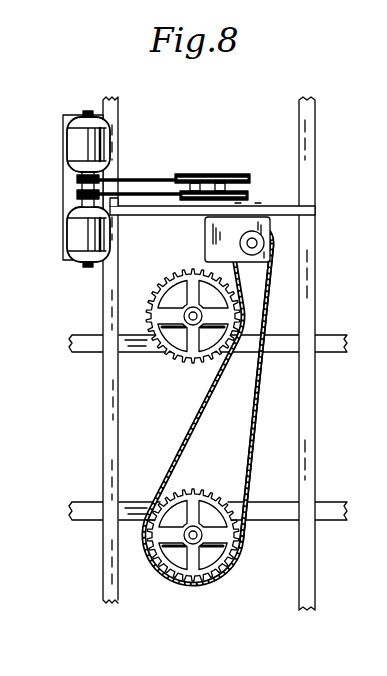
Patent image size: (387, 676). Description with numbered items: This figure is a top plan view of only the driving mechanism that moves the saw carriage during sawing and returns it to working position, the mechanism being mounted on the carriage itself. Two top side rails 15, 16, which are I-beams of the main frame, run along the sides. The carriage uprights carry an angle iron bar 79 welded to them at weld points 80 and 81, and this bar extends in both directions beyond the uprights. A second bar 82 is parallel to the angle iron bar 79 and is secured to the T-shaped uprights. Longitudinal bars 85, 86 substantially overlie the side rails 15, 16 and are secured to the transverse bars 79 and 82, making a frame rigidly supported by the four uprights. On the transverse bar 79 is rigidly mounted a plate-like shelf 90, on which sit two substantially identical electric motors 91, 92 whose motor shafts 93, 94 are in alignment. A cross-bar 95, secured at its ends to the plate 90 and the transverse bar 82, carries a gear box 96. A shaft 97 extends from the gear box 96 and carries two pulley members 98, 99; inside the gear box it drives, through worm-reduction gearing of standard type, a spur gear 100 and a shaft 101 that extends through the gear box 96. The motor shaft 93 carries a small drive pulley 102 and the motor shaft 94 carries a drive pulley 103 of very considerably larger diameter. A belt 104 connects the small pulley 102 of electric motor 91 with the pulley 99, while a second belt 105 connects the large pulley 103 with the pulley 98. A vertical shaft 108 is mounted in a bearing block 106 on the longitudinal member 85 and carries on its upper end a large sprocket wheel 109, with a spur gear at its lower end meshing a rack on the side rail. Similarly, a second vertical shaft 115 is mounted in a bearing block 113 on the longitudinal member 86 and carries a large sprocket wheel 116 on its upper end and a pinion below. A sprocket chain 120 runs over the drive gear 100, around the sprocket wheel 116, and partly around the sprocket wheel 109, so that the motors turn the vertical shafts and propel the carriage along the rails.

The top side rail 15 is at (332, 340).
The top side rail 16 is at (330, 516).
The angle iron bar 79 is at (108, 292).
The weld 80 is at (104, 334).
The weld 81 is at (104, 521).
The second bar 82 is at (315, 398).
The longitudinal bar 85 is at (146, 348).
The longitudinal bar 86 is at (137, 502).
The plate-like shelf 90 is at (66, 176).
The electric motor 91 is at (74, 146).
The electric motor 92 is at (84, 243).
The motor shaft 93 is at (100, 178).
The motor shaft 94 is at (80, 207).
The cross-bar 95 is at (265, 210).
The gear box 96 is at (212, 238).
The shaft 97 is at (242, 194).
The pulley member 98 is at (184, 174).
The pulley member 99 is at (240, 158).
The spur gear 100 is at (276, 269).
The shaft 101 is at (262, 244).
The drive pulley 102 is at (78, 182).
The drive pulley 103 is at (76, 194).
The belt 104 is at (155, 176).
The second belt 105 is at (122, 212).
The bearing block 106 is at (198, 270).
The vertical shaft 108 is at (180, 324).
The large sprocket wheel 109 is at (148, 316).
The bearing block 113 is at (208, 574).
The second vertical shaft 115 is at (193, 544).
The large sprocket wheel 116 is at (202, 530).
The sprocket chain 120 is at (257, 461).